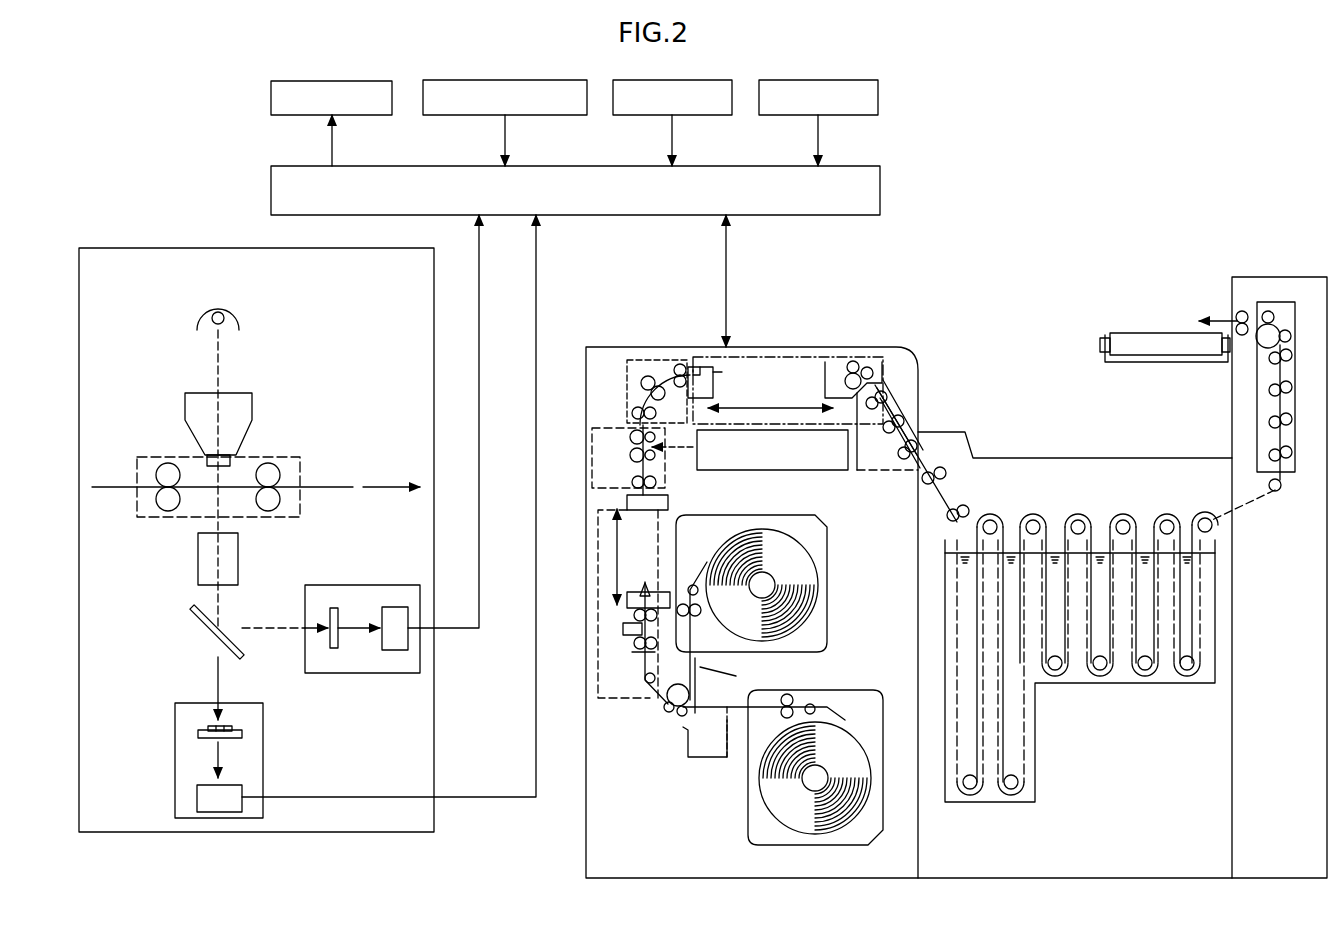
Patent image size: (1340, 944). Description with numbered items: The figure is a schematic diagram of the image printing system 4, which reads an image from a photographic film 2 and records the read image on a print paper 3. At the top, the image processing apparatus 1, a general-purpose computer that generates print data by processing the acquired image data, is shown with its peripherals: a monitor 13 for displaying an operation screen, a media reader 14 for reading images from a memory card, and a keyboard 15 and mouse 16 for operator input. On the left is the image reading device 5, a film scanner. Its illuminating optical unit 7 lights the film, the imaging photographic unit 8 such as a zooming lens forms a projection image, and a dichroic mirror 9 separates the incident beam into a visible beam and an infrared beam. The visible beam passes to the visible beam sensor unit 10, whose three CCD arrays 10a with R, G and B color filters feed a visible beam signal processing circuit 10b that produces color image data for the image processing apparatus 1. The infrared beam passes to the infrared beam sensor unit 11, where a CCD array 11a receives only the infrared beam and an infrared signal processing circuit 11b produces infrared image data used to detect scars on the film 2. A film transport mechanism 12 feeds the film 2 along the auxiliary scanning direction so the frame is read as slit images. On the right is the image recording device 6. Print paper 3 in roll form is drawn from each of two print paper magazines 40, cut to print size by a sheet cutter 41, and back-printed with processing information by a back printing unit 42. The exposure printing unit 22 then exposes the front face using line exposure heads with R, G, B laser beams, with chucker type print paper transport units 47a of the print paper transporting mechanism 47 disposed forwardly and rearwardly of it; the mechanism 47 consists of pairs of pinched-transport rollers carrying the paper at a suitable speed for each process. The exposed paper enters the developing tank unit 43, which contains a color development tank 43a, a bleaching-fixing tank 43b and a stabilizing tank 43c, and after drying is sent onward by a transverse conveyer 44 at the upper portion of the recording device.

The image processing apparatus 1 is at (271, 188).
The photographic film 2 is at (330, 487).
The print paper 3 is at (660, 378).
The image printing system 4 is at (1113, 129).
The image reading device 5 is at (193, 248).
The image recording device 6 is at (940, 290).
The illuminating optical unit 7 is at (236, 320).
The imaging photographic unit 8 is at (198, 560).
The dichroic mirror 9 is at (197, 624).
The visible beam sensor unit 10 is at (224, 737).
The CCD arrays 10a is at (208, 729).
The visible beam signal processing circuit 10b is at (197, 790).
The infrared beam sensor unit 11 is at (367, 634).
The CCD array 11a is at (333, 650).
The infrared signal processing circuit 11b is at (398, 652).
The film transport mechanism 12 is at (165, 457).
The monitor 13 is at (271, 97).
The media reader 14 is at (423, 97).
The keyboard 15 is at (703, 80).
The mouse 16 is at (878, 97).
The exposure printing unit 22 is at (797, 460).
The print paper magazines 40 is at (827, 622).
The sheet cutter 41 is at (637, 652).
The back printing unit 42 is at (622, 629).
The developing tank unit 43 is at (1081, 685).
The color development tank 43a is at (973, 795).
The bleaching-fixing tank 43b is at (1026, 795).
The stabilizing tank 43c is at (1190, 680).
The transverse conveyer 44 is at (1122, 333).
The print paper transporting mechanism 47 is at (642, 376).
The chucker type print paper transport units 47a is at (789, 355).